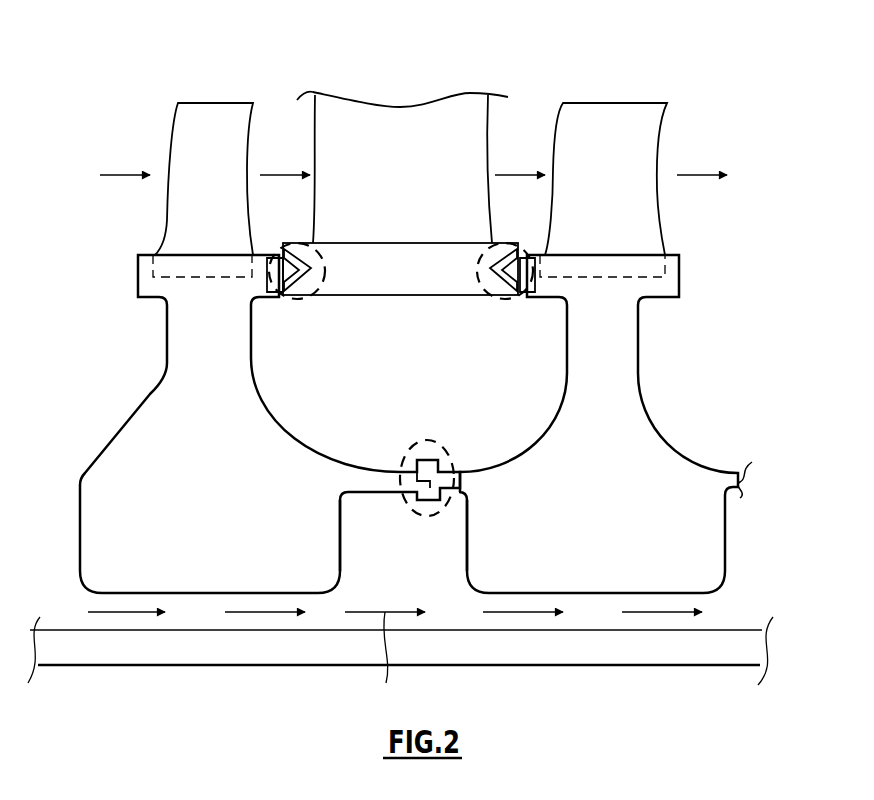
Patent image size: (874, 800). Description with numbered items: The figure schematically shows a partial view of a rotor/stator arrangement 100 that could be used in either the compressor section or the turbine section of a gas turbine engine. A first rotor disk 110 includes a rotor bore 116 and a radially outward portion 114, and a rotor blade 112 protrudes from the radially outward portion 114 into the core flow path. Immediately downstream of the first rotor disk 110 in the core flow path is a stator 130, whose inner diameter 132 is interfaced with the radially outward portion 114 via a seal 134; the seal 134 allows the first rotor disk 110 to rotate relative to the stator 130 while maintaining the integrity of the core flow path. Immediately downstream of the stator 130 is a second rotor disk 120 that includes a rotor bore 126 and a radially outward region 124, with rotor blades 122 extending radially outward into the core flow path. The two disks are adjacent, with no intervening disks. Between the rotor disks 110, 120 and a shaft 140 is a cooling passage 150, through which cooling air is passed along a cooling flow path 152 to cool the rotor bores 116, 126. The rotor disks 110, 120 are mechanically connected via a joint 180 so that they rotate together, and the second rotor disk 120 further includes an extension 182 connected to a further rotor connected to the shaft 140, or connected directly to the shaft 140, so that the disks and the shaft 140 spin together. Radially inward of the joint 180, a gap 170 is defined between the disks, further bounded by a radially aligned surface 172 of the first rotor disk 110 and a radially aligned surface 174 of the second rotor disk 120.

The rotor/stator arrangement 100 is at (776, 206).
The first rotor disk 110 is at (152, 392).
The rotor blade 112 is at (188, 201).
The radially outward portion 114 is at (190, 349).
The rotor bore 116 is at (190, 522).
The second rotor disk 120 is at (660, 428).
The rotor blades 122 is at (583, 201).
The radially outward region 124 is at (583, 347).
The rotor bore 126 is at (583, 526).
The stator 130 is at (380, 201).
The inner diameter 132 is at (372, 298).
The seal 134 is at (300, 300).
The shaft 140 is at (105, 650).
The cooling passage 150 is at (87, 602).
The cooling flow path 152 is at (386, 683).
The gap 170 is at (380, 571).
The radially aligned surface 172 is at (340, 556).
The radially aligned surface 174 is at (462, 534).
The joint 180 is at (452, 456).
The extension 182 is at (738, 468).